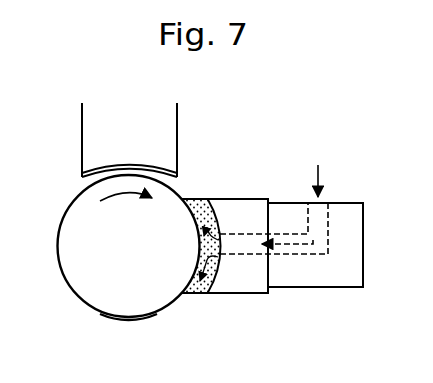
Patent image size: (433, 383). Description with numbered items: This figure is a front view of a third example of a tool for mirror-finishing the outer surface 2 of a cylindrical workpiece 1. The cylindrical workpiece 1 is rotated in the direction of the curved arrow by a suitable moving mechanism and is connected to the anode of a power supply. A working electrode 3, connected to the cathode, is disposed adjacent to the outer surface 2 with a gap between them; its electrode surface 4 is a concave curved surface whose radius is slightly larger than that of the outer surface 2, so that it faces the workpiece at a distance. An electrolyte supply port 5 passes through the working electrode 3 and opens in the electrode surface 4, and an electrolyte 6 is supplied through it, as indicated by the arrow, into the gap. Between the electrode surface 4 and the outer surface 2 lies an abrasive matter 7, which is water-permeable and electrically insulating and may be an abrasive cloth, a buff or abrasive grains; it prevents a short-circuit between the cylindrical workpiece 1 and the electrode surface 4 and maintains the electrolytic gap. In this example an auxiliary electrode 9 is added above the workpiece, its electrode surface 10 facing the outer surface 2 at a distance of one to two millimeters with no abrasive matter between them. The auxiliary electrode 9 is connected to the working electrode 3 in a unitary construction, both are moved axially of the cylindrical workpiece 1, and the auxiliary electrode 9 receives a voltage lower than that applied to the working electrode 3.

The cylindrical workpiece 1 is at (96, 279).
The outer surface 2 is at (141, 317).
The working electrode 3 is at (245, 278).
The electrode surface 4 is at (218, 218).
The electrolyte supply port 5 is at (294, 254).
The electrolyte 6 is at (318, 169).
The abrasive matter 7 is at (200, 283).
The auxiliary electrode 9 is at (88, 137).
The electrode surface 10 is at (147, 167).